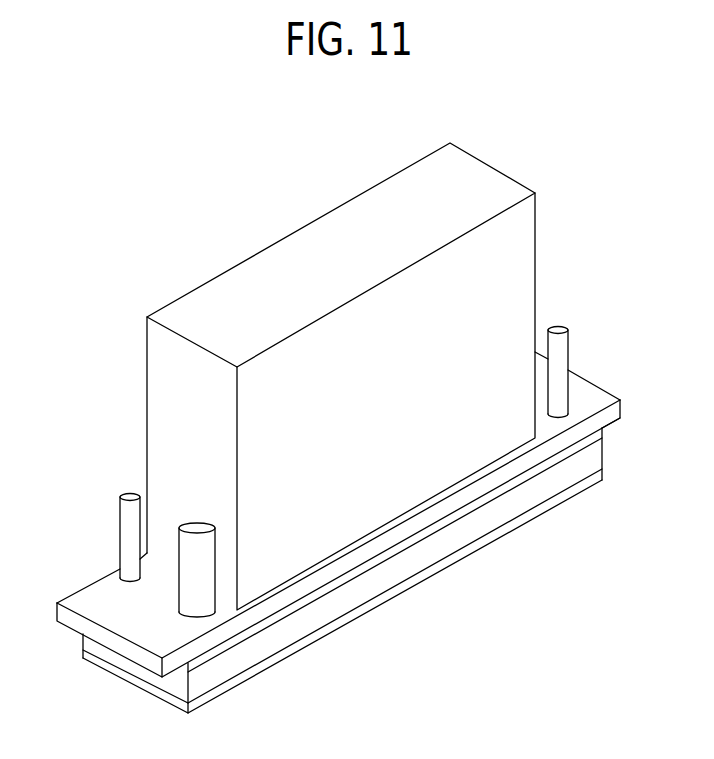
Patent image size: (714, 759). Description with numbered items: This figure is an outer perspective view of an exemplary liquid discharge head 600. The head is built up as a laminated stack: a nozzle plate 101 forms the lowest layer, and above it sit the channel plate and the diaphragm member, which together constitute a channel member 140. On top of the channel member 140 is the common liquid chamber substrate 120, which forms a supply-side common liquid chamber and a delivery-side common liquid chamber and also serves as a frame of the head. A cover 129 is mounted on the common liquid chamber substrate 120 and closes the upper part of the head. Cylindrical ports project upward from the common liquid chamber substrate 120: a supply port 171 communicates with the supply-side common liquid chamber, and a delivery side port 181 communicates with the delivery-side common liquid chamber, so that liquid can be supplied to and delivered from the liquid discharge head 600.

The liquid discharge head 600 is at (527, 118).
The cover 129 is at (307, 246).
The common liquid chamber substrate 120 is at (542, 453).
The channel member 140 is at (492, 517).
The nozzle plate 101 is at (457, 560).
The supply port 171 is at (197, 597).
The delivery side port 181 is at (125, 515).